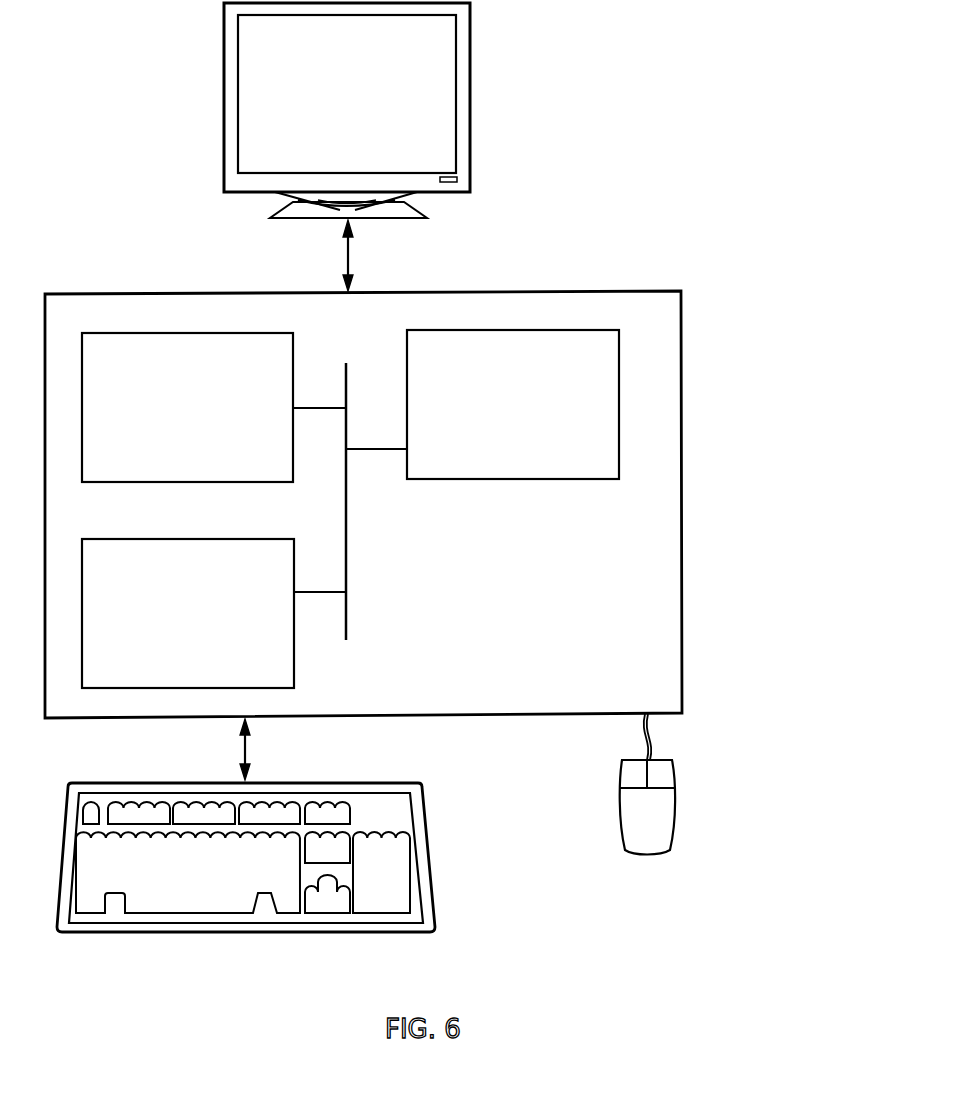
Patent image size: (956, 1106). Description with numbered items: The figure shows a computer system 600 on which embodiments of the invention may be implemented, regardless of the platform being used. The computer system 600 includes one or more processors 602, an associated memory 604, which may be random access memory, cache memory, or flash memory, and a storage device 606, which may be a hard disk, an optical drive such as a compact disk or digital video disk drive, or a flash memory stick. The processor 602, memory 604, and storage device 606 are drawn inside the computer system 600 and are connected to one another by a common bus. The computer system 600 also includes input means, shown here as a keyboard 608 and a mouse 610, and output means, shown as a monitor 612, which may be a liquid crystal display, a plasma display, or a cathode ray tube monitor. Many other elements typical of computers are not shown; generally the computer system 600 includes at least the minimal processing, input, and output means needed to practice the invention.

The computer system 600 is at (454, 474).
The processor 602 is at (494, 403).
The memory 604 is at (168, 408).
The storage device 606 is at (169, 610).
The keyboard 608 is at (168, 868).
The mouse 610 is at (681, 860).
The monitor 612 is at (324, 102).